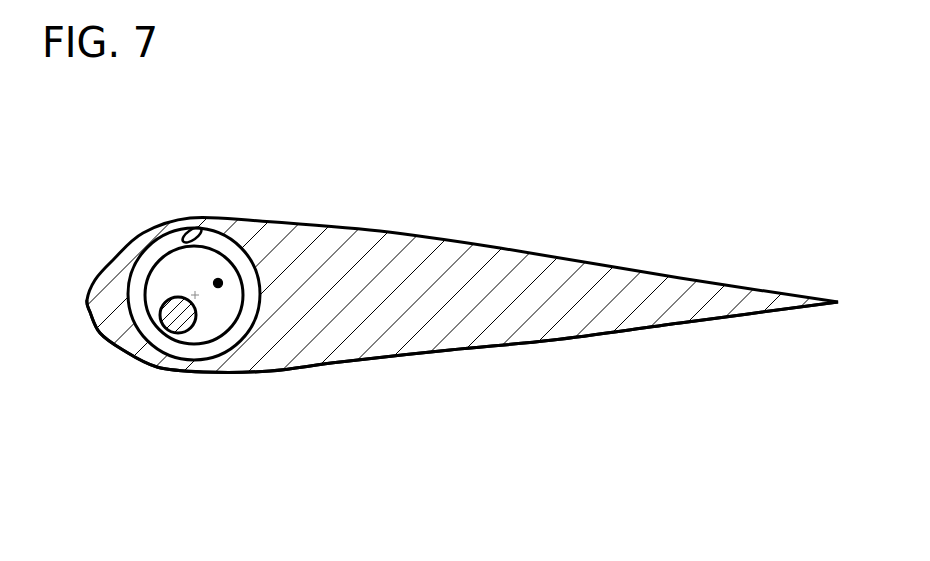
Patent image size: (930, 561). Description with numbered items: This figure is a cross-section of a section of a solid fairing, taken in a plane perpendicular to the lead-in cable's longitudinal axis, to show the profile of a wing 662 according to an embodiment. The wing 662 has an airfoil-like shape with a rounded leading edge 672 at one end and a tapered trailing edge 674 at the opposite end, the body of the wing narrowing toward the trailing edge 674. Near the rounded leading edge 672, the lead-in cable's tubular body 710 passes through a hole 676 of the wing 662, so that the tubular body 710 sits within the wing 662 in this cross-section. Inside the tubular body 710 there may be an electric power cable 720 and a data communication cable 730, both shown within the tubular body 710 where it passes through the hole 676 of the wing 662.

The wing 662 is at (455, 236).
The rounded leading edge 672 is at (143, 234).
The tapered trailing edge 674 is at (553, 348).
The hole 676 is at (200, 237).
The tubular body 710 is at (203, 350).
The electric power cable 720 is at (175, 317).
The data communication cable 730 is at (218, 283).